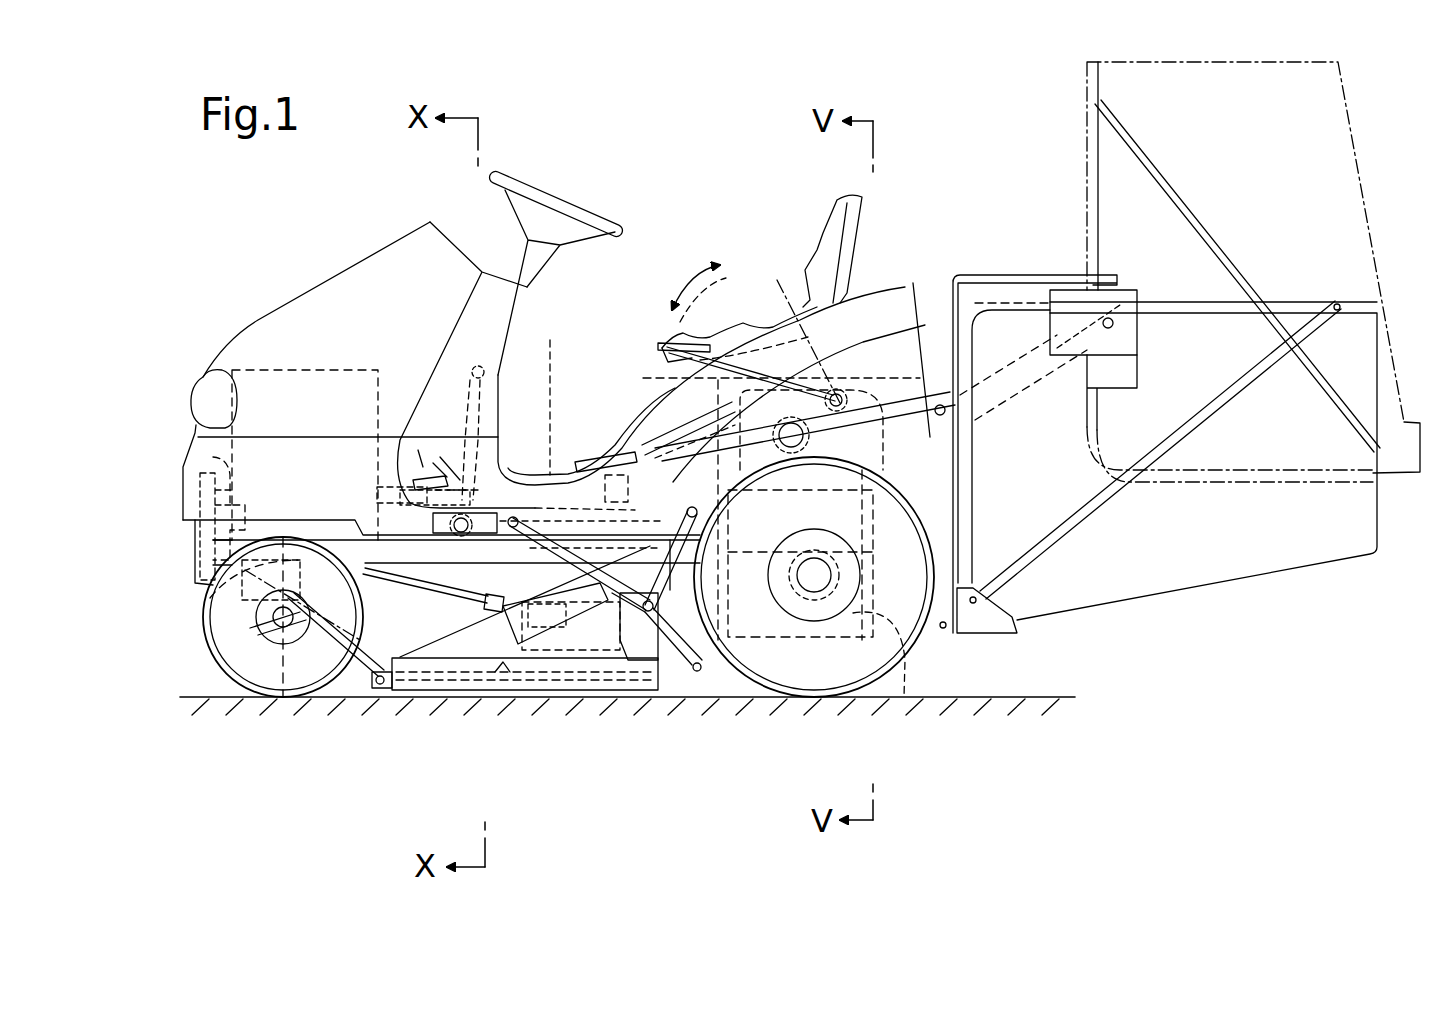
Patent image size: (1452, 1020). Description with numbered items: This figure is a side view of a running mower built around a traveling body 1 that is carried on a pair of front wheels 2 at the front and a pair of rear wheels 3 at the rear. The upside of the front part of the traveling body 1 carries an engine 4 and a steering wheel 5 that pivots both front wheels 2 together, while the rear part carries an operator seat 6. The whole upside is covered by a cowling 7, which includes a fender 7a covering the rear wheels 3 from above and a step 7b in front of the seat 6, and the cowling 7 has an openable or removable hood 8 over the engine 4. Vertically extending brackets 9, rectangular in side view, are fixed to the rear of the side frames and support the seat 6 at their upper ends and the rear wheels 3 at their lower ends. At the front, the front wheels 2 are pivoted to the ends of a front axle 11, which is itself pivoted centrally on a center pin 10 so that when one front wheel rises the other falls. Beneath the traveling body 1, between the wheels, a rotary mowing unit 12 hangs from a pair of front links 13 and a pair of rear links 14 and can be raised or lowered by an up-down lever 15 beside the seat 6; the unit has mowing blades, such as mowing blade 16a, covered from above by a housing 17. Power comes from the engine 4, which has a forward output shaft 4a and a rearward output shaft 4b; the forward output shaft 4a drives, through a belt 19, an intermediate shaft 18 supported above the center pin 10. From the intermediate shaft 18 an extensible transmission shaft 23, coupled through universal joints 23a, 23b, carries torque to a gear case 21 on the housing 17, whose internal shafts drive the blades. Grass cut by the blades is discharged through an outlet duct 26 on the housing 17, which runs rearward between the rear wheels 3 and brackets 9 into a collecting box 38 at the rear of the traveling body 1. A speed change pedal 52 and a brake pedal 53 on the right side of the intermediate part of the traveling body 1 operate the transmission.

The traveling body 1 is at (473, 570).
The front wheels 2 is at (260, 668).
The rear wheels 3 is at (858, 668).
The engine 4 is at (273, 380).
The output shaft 4a is at (213, 457).
The output shaft 4b is at (387, 487).
The steering wheel 5 is at (557, 198).
The seat 6 is at (805, 268).
The cowling 7 is at (622, 433).
The fender 7a is at (885, 303).
The step 7b is at (552, 380).
The hood 8 is at (334, 282).
The brackets 9 is at (910, 700).
The center pin 10 is at (255, 603).
The front axle 11 is at (245, 660).
The rotary mowing unit 12 is at (530, 660).
The front links 13 is at (412, 602).
The rear links 14 is at (685, 672).
The up-down lever 15 is at (728, 380).
The mowing blade 16a is at (632, 662).
The housing 17 is at (503, 665).
The intermediate shaft 18 is at (198, 545).
The belt 19 is at (200, 500).
The gear case 21 is at (620, 665).
The extensible transmission shaft 23 is at (445, 595).
The universal joint 23a is at (322, 695).
The universal joint 23b is at (595, 685).
The outlet duct 26 is at (712, 620).
The collecting box 38 is at (1195, 342).
The speed change pedal 52 is at (417, 400).
The brake pedal 53 is at (470, 378).